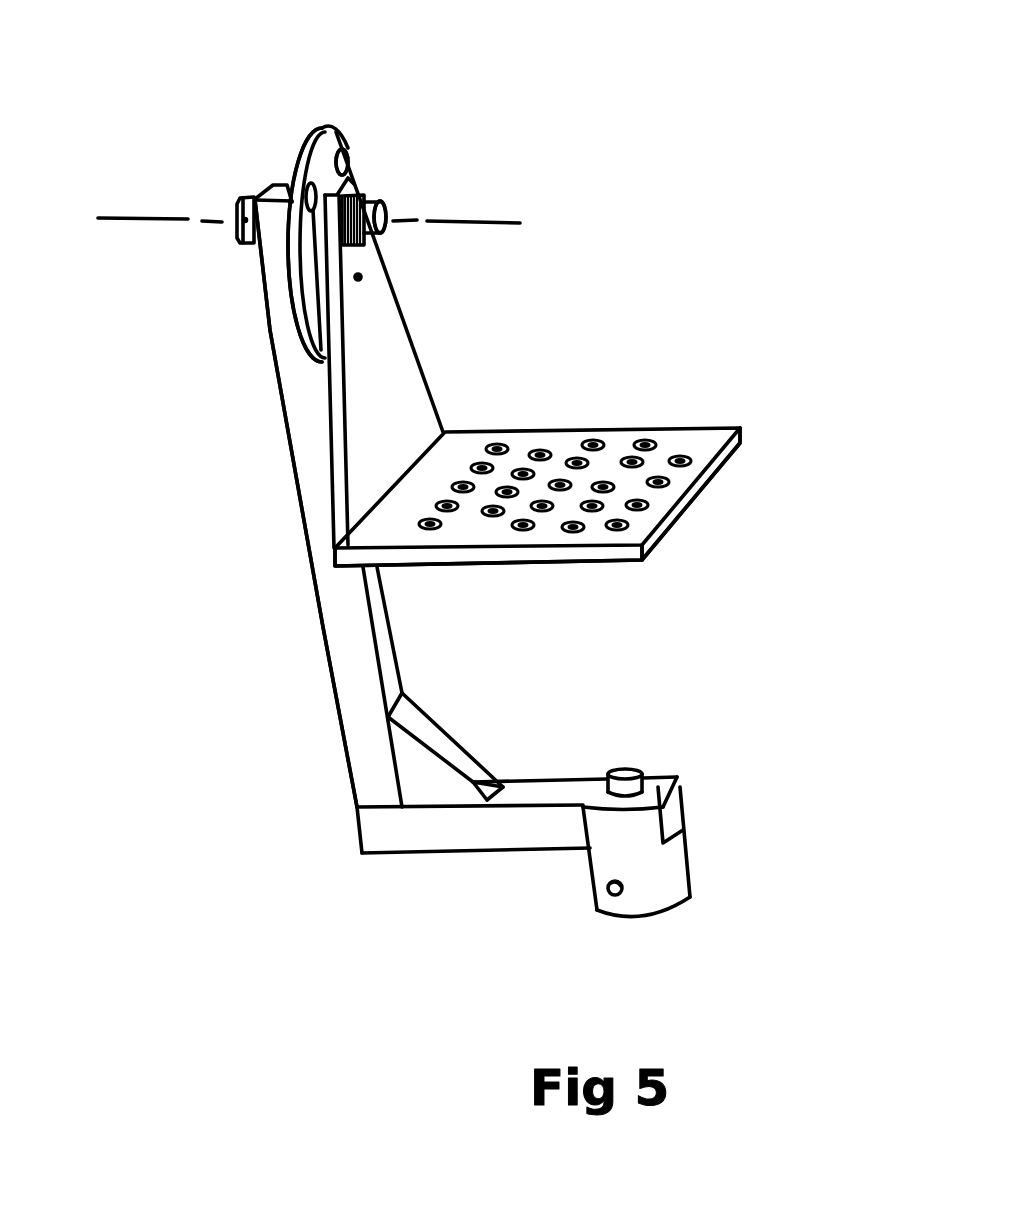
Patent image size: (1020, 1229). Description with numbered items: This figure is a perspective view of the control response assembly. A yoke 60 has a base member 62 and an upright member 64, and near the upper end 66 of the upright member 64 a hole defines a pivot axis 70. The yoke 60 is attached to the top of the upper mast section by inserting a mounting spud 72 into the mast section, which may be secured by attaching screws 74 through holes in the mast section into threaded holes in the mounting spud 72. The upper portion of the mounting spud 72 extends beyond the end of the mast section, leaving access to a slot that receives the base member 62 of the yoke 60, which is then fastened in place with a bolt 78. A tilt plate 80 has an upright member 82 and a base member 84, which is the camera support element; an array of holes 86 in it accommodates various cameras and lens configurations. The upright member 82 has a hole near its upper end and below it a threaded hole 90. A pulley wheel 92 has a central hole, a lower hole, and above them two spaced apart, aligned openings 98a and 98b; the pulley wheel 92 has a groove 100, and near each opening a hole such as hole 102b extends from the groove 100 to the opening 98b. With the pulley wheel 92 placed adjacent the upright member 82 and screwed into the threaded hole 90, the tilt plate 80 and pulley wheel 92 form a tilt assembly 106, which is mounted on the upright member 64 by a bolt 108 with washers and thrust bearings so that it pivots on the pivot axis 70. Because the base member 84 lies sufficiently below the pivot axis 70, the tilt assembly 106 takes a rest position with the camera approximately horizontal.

The yoke 60 is at (335, 688).
The base member 62 is at (490, 853).
The upright member 64 is at (290, 440).
The upper end 66 is at (252, 265).
The pivot axis 70 is at (125, 216).
The mounting spud 72 is at (692, 850).
The screws 74 is at (618, 895).
The bolt 78 is at (632, 778).
The tilt plate 80 is at (713, 482).
The upright member 82 is at (420, 353).
The base member 84 is at (663, 547).
The array of holes 86 is at (605, 484).
The threaded hole 90 is at (358, 277).
The pulley wheel 92 is at (368, 160).
The opening 98a is at (344, 175).
The opening 98b is at (292, 205).
The groove 100 is at (320, 127).
The hole 102b is at (306, 208).
The tilt assembly 106 is at (472, 188).
The bolt 108 is at (385, 203).